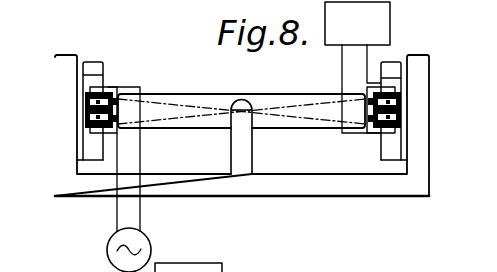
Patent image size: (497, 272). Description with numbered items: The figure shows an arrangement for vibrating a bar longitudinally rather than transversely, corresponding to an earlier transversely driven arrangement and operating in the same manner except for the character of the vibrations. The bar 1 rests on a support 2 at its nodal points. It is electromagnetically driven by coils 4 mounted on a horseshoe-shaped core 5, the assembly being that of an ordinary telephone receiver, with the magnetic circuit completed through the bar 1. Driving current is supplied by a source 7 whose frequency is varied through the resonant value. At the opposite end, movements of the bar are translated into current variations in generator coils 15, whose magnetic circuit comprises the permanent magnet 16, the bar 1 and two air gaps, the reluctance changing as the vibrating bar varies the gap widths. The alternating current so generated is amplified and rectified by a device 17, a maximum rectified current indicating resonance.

The bar 1 is at (211, 94).
The support 2 is at (316, 194).
The coils 4 is at (100, 118).
The horseshoe-shaped core 5 is at (103, 70).
The source 7 is at (107, 243).
The generator coils 15 is at (403, 118).
The permanent magnet 16 is at (393, 63).
The device 17 is at (390, 22).